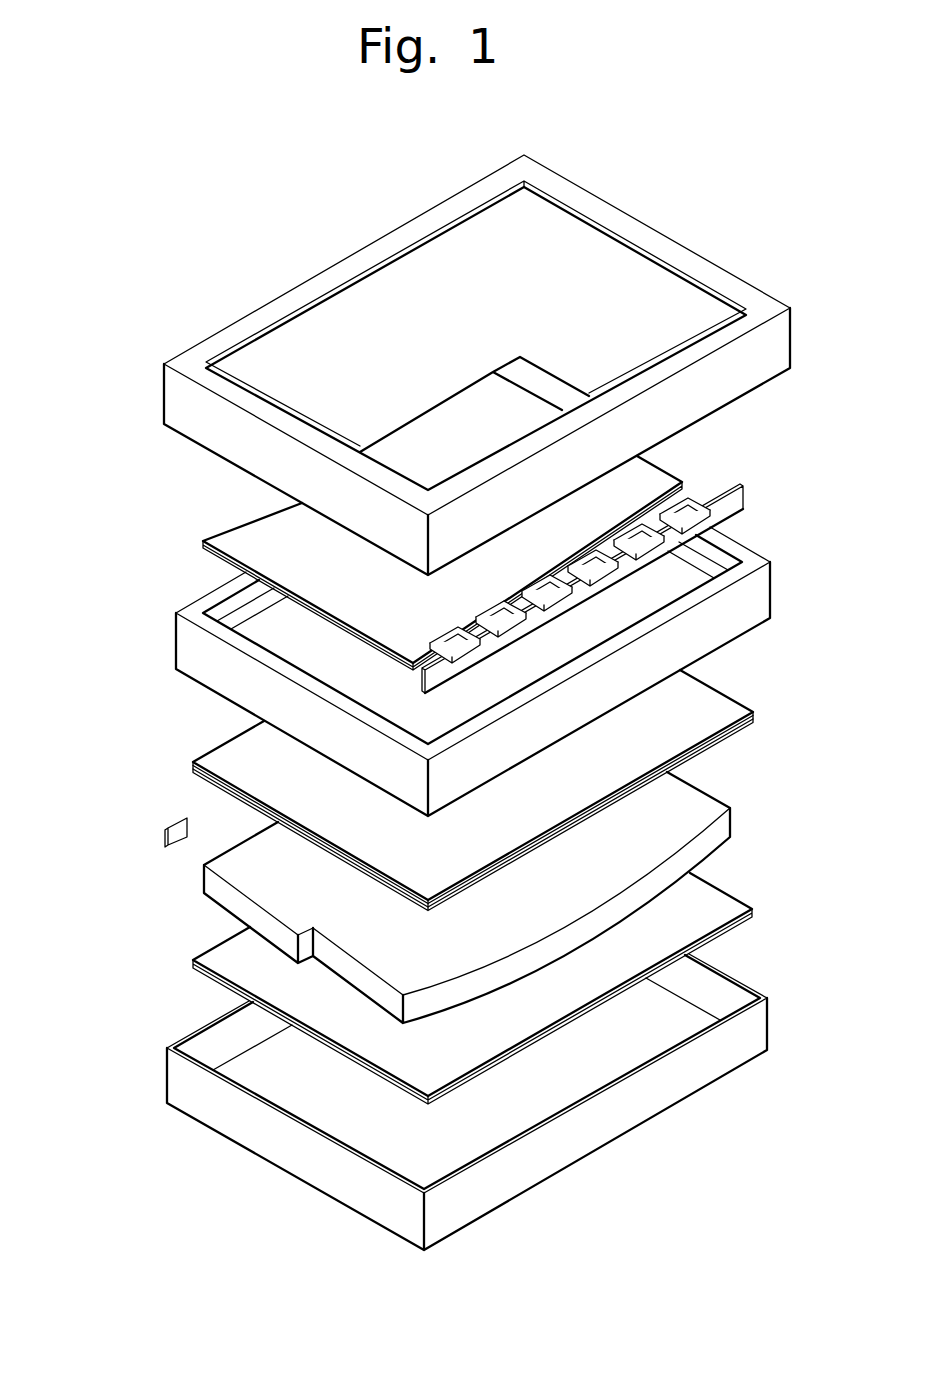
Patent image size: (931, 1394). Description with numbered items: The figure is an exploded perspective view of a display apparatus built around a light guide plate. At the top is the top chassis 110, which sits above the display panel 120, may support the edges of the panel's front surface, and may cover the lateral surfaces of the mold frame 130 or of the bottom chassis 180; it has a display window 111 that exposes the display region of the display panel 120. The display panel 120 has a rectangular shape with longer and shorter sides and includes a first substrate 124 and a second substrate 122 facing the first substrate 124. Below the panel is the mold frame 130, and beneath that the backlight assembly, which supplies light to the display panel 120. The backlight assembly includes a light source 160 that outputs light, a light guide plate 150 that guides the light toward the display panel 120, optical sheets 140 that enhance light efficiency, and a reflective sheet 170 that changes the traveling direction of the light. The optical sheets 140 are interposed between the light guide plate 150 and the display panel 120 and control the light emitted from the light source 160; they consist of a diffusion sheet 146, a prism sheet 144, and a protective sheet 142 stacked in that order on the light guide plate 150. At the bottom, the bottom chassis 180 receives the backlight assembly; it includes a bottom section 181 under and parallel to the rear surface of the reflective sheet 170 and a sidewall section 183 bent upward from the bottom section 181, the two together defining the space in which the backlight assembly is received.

The top chassis 110 is at (468, 365).
The display window 111 is at (448, 277).
The display panel 120 is at (510, 553).
The second substrate 122 is at (655, 478).
The first substrate 124 is at (698, 478).
The mold frame 130 is at (181, 648).
The optical sheets 140 is at (410, 790).
The protective sheet 142 is at (192, 762).
The prism sheet 144 is at (192, 766).
The diffusion sheet 146 is at (192, 770).
The light guide plate 150 is at (203, 880).
The light source 160 is at (165, 830).
The reflective sheet 170 is at (192, 961).
The bottom chassis 180 is at (416, 1102).
The bottom section 181 is at (335, 1104).
The sidewall section 183 is at (208, 1106).